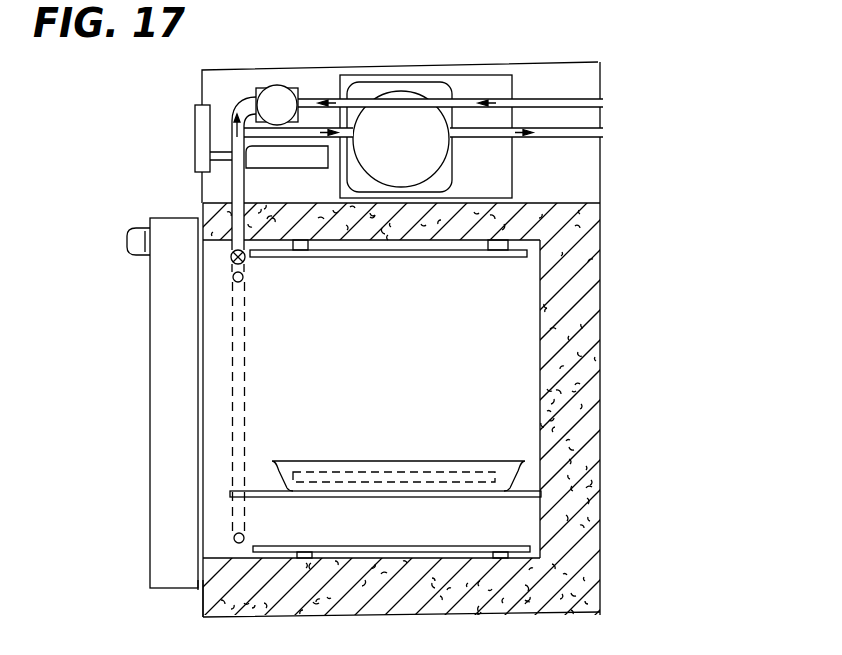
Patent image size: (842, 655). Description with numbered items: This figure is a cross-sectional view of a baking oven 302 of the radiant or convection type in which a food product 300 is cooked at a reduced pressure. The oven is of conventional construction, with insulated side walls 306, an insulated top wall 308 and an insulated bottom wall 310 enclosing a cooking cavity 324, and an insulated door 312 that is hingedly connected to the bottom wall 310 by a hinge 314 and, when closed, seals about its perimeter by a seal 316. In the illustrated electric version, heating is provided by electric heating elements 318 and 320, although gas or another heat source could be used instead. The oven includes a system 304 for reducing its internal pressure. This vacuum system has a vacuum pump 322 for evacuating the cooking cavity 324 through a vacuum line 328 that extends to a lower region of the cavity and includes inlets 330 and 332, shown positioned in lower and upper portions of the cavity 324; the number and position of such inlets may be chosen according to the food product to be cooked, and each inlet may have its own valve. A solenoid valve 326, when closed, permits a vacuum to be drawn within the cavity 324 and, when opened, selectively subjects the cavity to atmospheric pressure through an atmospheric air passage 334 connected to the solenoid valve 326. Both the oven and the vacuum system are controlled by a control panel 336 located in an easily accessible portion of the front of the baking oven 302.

The food product 300 is at (434, 450).
The baking oven 302 is at (417, 62).
The system for reducing the internal pressure 304 is at (516, 165).
The insulated side walls 306 is at (601, 370).
The insulated top wall 308 is at (557, 222).
The insulated bottom wall 310 is at (474, 614).
The insulated door 312 is at (150, 361).
The hinge 314 is at (203, 592).
The seal 316 is at (204, 214).
The electric heating element 318 is at (372, 546).
The electric heating element 320 is at (377, 257).
The vacuum pump 322 is at (478, 74).
The cooking cavity 324 is at (402, 339).
The solenoid valve 326 is at (292, 92).
The vacuum line 328 is at (272, 147).
The inlet 330 is at (249, 540).
The inlet 332 is at (245, 281).
The atmospheric air passage 334 is at (568, 99).
The control panel 336 is at (195, 138).